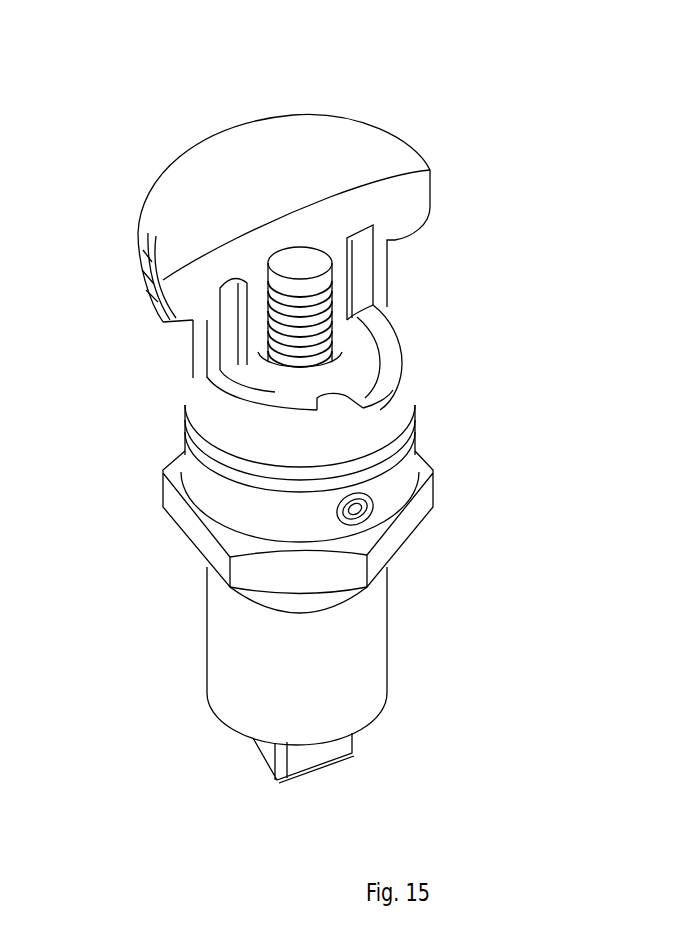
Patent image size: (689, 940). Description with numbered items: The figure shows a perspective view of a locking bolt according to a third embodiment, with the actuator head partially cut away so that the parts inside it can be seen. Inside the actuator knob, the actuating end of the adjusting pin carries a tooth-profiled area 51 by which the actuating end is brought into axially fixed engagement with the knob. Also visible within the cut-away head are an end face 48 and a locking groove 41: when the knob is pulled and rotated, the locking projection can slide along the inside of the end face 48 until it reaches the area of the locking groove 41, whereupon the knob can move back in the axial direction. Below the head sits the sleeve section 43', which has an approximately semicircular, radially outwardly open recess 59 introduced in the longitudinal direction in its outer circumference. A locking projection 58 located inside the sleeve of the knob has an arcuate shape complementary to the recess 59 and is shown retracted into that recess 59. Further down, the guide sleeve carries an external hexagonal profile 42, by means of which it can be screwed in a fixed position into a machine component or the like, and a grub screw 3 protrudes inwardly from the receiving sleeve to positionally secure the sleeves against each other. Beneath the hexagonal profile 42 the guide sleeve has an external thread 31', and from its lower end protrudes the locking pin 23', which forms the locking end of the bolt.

The tooth-profiled area 51 is at (262, 311).
The end face 48 is at (233, 317).
The locking groove 41 is at (233, 347).
The sleeve section 43' is at (463, 344).
The locking projection 58 is at (345, 393).
The recess 59 is at (402, 363).
The external hexagonal profile 42 is at (398, 530).
The grub screw 3 is at (373, 503).
The external thread 31' is at (339, 656).
The locking pin 23' is at (362, 759).